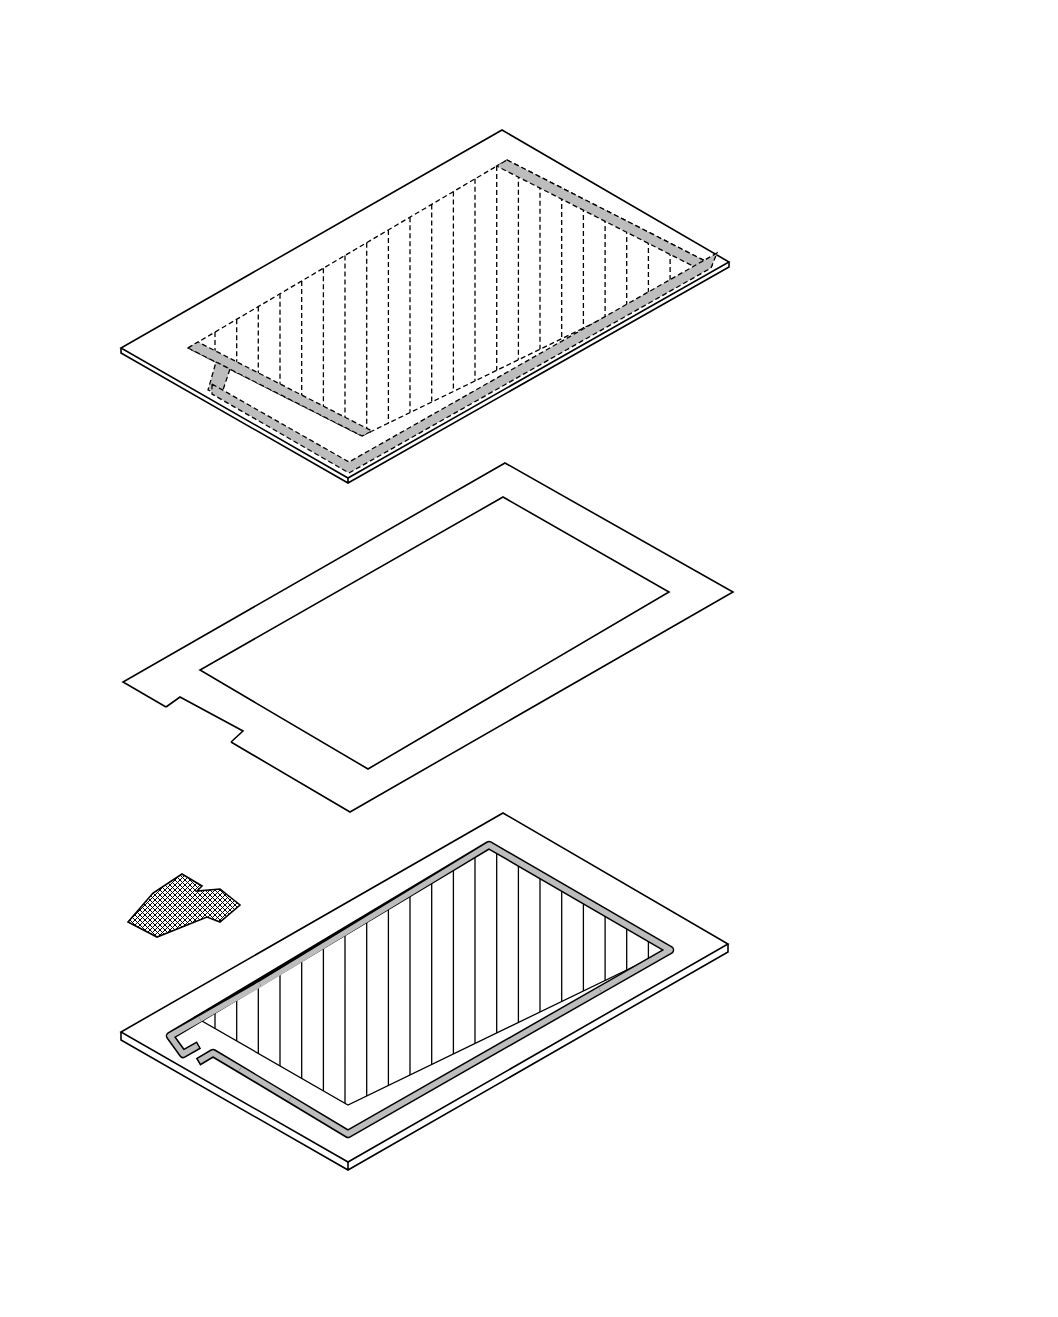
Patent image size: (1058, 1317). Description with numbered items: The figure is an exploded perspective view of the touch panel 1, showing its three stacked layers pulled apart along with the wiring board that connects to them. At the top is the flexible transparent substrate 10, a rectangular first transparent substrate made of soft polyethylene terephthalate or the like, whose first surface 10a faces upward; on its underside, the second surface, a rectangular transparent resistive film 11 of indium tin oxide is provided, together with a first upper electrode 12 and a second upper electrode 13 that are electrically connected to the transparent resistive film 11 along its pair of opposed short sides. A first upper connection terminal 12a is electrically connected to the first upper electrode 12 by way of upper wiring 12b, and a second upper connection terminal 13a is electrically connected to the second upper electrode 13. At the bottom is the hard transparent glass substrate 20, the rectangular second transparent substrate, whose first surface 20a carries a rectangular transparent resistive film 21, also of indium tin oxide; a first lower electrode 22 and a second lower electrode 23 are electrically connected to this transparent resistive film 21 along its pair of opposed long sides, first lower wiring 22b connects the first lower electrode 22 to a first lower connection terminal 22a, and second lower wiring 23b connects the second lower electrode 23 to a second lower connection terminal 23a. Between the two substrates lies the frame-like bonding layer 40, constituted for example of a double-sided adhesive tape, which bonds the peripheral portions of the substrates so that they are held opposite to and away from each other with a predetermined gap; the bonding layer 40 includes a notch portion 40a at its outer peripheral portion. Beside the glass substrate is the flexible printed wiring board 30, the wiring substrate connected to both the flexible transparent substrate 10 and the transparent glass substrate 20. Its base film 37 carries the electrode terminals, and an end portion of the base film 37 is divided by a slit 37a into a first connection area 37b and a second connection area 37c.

The touch panel 1 is at (723, 67).
The flexible transparent substrate 10 is at (507, 142).
The first surface 10a is at (328, 242).
The transparent resistive film 11 is at (553, 290).
The first upper electrode 12 is at (600, 200).
The first upper connection terminal 12a is at (223, 410).
The upper wiring 12b is at (647, 305).
The second upper electrode 13 is at (227, 353).
The second upper connection terminal 13a is at (210, 387).
The transparent glass substrate 20 is at (702, 940).
The first surface 20a is at (603, 888).
The transparent resistive film 21 is at (563, 973).
The first lower electrode 22 is at (393, 902).
The first lower connection terminal 22a is at (175, 1048).
The first lower wiring 22b is at (163, 1036).
The second lower electrode 23 is at (520, 1033).
The second lower connection terminal 23a is at (215, 1067).
The second lower wiring 23b is at (282, 1100).
The flexible printed wiring board 30 is at (126, 938).
The base film 37 is at (142, 908).
The slit 37a is at (220, 877).
The first connection area 37b is at (170, 877).
The second connection area 37c is at (233, 910).
The bonding layer 40 is at (627, 547).
The notch portion 40a is at (205, 731).